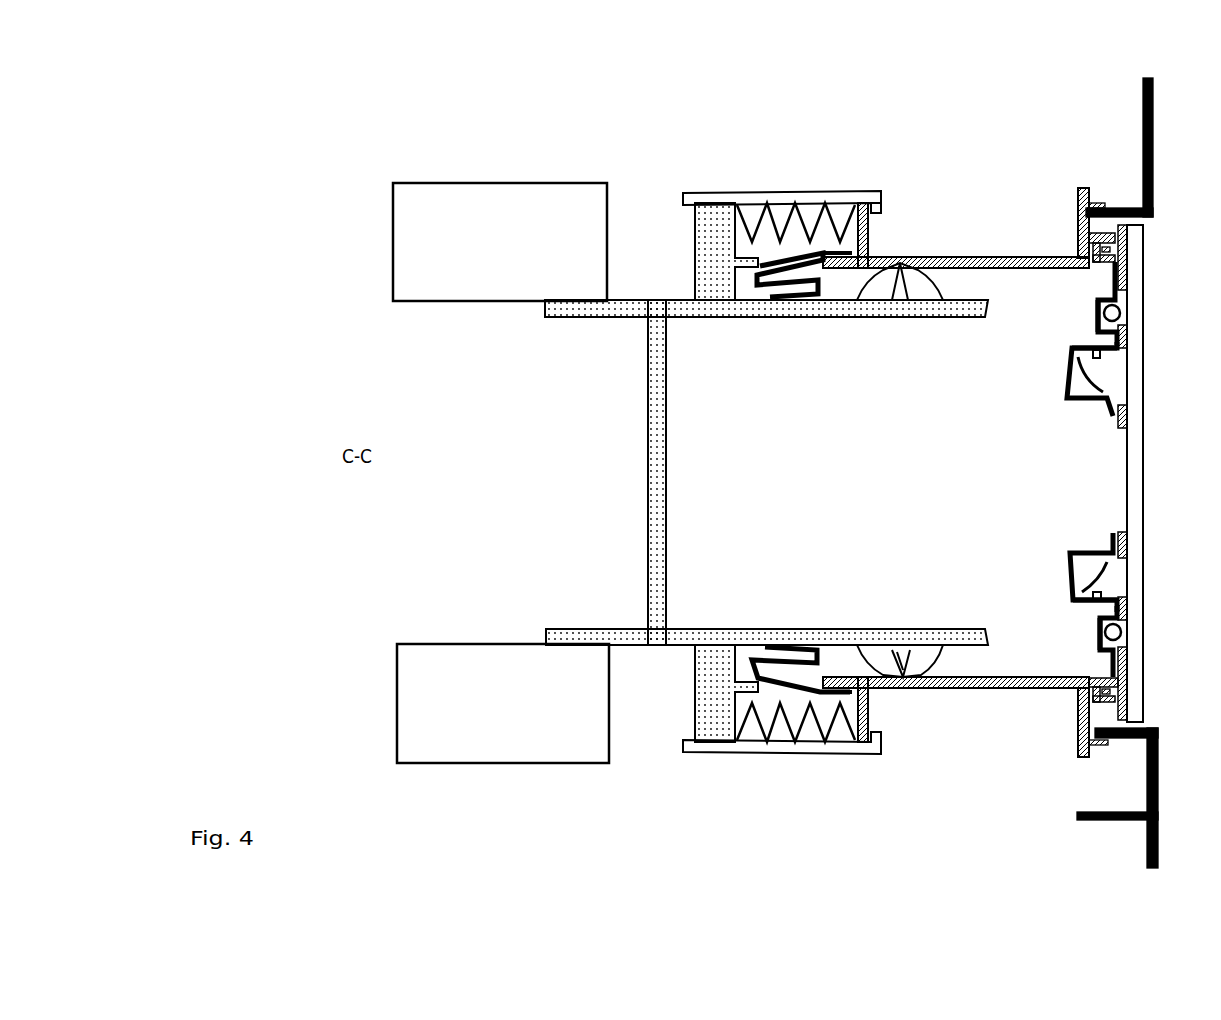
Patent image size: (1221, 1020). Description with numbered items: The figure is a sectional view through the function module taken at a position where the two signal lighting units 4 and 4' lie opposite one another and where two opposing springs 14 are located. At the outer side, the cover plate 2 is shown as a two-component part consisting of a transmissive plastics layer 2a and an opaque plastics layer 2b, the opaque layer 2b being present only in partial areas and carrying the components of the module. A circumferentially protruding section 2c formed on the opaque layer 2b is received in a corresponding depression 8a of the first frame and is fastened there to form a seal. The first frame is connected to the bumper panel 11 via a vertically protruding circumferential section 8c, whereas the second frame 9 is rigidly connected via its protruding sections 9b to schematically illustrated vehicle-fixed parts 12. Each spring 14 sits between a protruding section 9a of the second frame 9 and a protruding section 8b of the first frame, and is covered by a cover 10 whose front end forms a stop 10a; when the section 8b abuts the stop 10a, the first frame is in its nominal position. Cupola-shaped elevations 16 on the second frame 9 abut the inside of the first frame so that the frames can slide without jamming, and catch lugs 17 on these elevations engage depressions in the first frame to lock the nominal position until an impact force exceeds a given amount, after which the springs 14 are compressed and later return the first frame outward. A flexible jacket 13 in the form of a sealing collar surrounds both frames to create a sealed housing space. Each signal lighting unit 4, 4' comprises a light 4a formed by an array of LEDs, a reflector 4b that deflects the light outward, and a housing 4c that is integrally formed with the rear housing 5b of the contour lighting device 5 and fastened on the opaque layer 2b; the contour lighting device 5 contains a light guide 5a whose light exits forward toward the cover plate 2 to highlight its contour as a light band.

The cover plate 2 is at (1152, 474).
The transmissive plastics layer 2a is at (1135, 436).
The opaque plastics layer 2b is at (1128, 260).
The protruding section 2c is at (1108, 232).
The signal lighting unit 4 is at (1062, 379).
The signal lighting unit 4' is at (1062, 572).
The light 4a is at (1100, 356).
The reflector 4b is at (1068, 370).
The housing 4c is at (1088, 380).
The contour lighting device 5 is at (1091, 307).
The light guide 5a is at (1122, 313).
The rear housing 5b is at (1100, 320).
The depression 8a is at (1078, 250).
The protruding section 8b is at (868, 238).
The circumferential section 8c is at (1078, 195).
The second frame 9 is at (636, 480).
The protruding section 9a is at (695, 245).
The protruding section 9b is at (583, 318).
The cover 10 is at (835, 190).
The stop 10a is at (881, 205).
The bumper panel 11 is at (1155, 150).
The vehicle-fixed parts 12 is at (500, 187).
The flexible jacket 13 is at (794, 302).
The spring 14 is at (748, 222).
The cupola-shaped elevation 16 is at (930, 657).
The catch lug 17 is at (905, 652).